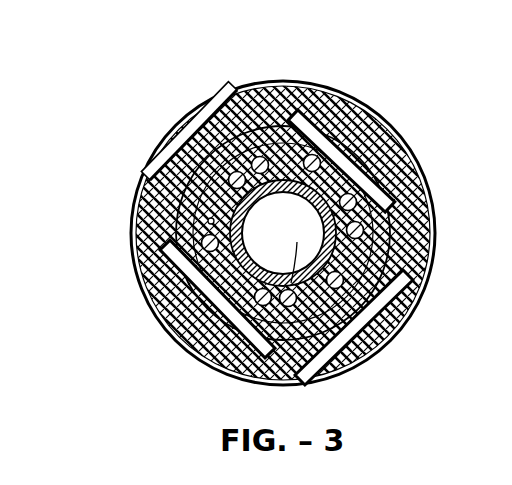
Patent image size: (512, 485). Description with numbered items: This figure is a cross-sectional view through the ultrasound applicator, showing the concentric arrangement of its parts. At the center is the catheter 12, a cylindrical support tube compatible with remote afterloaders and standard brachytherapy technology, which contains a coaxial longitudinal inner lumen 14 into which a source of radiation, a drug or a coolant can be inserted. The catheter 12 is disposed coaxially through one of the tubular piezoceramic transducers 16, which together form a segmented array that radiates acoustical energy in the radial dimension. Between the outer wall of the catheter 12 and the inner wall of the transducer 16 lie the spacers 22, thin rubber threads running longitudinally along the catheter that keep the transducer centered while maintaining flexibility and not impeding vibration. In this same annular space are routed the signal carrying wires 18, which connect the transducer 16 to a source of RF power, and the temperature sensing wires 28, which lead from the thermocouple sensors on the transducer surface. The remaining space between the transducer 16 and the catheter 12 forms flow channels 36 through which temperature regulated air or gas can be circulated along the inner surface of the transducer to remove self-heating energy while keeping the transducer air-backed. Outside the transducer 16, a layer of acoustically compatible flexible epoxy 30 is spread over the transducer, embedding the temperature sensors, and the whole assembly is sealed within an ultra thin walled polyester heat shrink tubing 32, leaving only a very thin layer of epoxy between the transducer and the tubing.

The catheter 12 is at (393, 276).
The inner lumen 14 is at (377, 340).
The tubular piezoceramic transducers 16 is at (340, 186).
The signal carrying wires 18 is at (243, 173).
The spacers 22 is at (215, 270).
The temperature sensing wires 28 is at (208, 220).
The flexible epoxy 30 is at (260, 93).
The heat shrink tubing 32 is at (193, 344).
The flow channels 36 is at (410, 148).